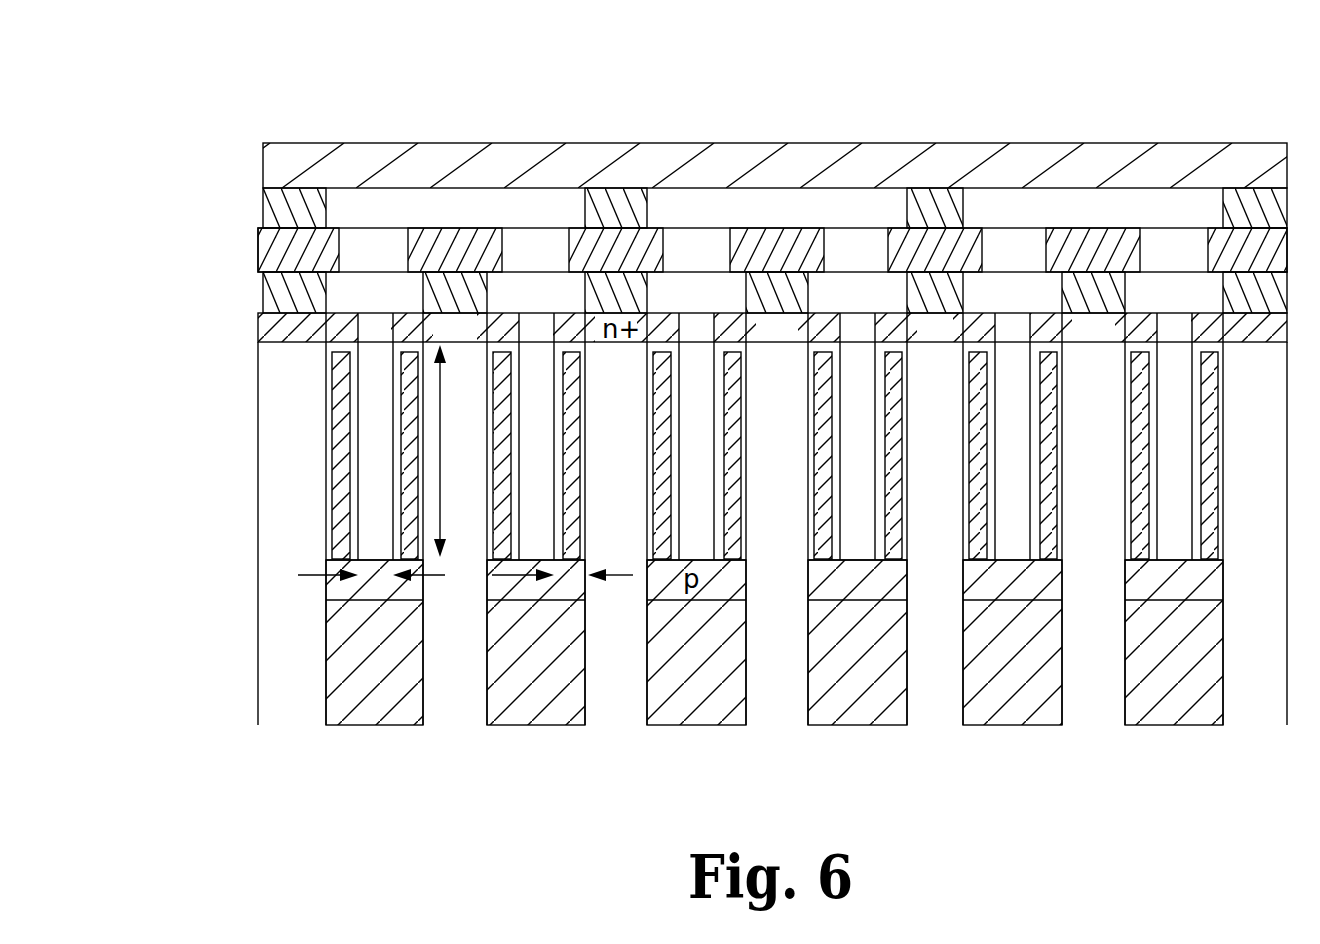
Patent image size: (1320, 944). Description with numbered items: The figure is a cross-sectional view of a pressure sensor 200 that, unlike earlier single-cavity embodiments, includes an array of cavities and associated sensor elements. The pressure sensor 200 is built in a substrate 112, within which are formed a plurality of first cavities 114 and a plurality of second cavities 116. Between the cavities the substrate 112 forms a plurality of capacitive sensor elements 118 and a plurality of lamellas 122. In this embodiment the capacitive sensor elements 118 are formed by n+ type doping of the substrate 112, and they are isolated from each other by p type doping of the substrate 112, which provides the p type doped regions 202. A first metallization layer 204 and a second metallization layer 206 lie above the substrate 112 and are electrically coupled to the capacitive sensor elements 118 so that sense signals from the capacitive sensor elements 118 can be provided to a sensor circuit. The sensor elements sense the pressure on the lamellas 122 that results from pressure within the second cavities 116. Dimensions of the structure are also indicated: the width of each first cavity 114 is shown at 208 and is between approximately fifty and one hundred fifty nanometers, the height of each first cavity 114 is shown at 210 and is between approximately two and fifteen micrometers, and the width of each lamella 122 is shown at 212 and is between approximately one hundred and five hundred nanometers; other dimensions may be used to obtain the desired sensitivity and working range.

The pressure sensor 200 is at (1012, 100).
The second metallization layer 206 is at (282, 167).
The first metallization layer 204 is at (265, 258).
The first cavity 114 is at (378, 388).
The capacitive sensor element 118 is at (348, 413).
The lamella 122 is at (330, 485).
The width of first cavity 208 is at (318, 574).
The p type doped region 202 is at (337, 590).
The height of first cavity 210 is at (448, 560).
The width of lamella 212 is at (623, 575).
The second cavity 116 is at (290, 708).
The substrate 112 is at (1163, 712).